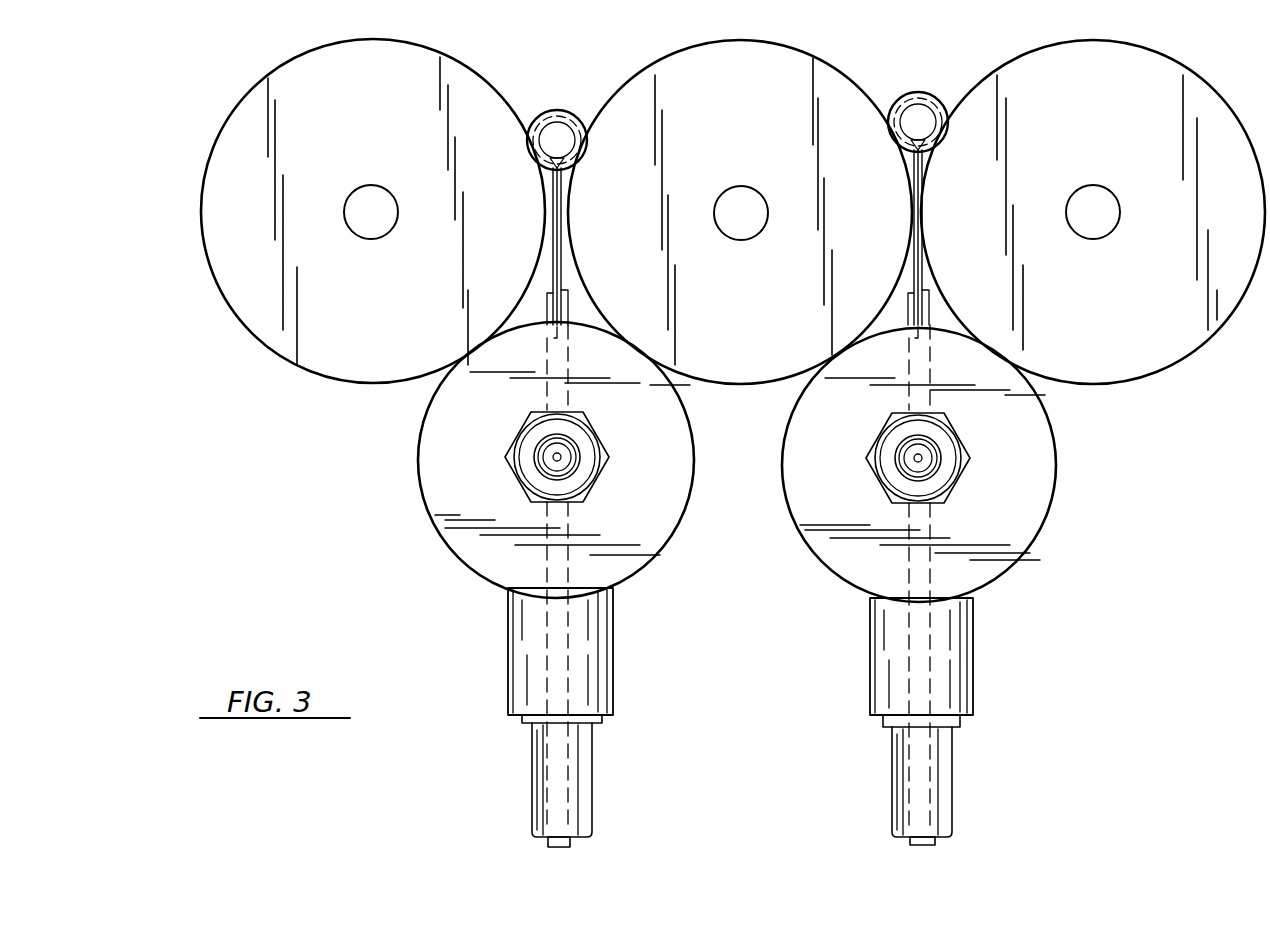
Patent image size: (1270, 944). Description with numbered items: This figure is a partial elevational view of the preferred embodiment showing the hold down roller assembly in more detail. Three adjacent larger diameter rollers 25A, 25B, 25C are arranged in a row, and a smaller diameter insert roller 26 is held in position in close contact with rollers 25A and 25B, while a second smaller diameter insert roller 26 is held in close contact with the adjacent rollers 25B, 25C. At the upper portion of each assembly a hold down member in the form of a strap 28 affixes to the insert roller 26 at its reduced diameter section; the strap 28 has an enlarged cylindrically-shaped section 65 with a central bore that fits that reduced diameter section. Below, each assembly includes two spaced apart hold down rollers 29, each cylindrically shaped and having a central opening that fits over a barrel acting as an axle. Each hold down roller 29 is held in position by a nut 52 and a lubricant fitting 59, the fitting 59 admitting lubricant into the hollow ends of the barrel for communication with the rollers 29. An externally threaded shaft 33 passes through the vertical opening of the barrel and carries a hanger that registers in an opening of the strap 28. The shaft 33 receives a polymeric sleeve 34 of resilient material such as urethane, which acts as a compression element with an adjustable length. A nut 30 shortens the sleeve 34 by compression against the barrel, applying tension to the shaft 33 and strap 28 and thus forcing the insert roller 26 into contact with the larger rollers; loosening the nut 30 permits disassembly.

The larger diameter roller 25A is at (298, 68).
The larger diameter roller 25B is at (800, 52).
The larger diameter roller 25C is at (1173, 60).
The smaller diameter insert roller 26 is at (556, 127).
The enlarged cylindrically-shaped section 65 is at (573, 112).
The strap 28 is at (550, 247).
The hold down roller 29 is at (476, 570).
The nut 52 is at (505, 463).
The lubricant fitting 59 is at (562, 456).
The externally threaded shaft 33 is at (566, 588).
The polymeric sleeve 34 is at (508, 670).
The nut 30 is at (592, 803).